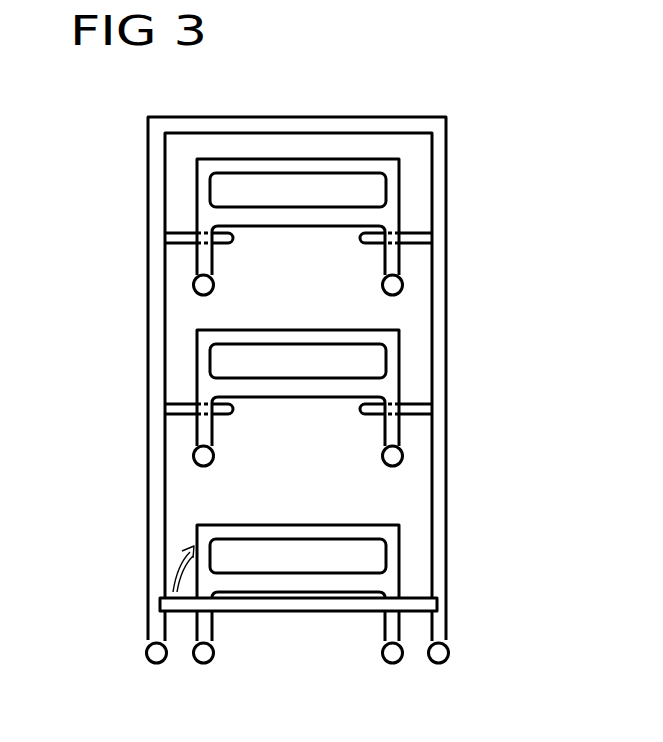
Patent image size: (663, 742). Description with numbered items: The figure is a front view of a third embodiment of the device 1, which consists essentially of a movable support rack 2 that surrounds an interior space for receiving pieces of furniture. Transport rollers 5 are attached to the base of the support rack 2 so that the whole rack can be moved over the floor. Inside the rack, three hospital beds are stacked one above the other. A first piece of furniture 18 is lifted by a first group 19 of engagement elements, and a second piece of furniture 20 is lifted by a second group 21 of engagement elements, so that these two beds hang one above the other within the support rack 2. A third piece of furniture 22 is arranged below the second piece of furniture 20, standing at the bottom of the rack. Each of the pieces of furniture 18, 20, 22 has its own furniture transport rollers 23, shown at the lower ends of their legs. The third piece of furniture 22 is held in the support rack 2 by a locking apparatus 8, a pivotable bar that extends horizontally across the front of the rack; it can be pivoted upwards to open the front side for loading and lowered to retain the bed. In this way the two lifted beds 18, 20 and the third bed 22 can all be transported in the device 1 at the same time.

The device 1 is at (112, 140).
The support rack 2 is at (447, 134).
The transport rollers 5 is at (153, 662).
The locking device 8 is at (292, 612).
The first piece of furniture 18 is at (390, 182).
The first group of engagement elements 19 is at (172, 240).
The second piece of furniture 20 is at (390, 353).
The second group of engagement elements 21 is at (172, 411).
The third piece of furniture 22 is at (390, 556).
The furniture transport rollers 23 is at (193, 285).